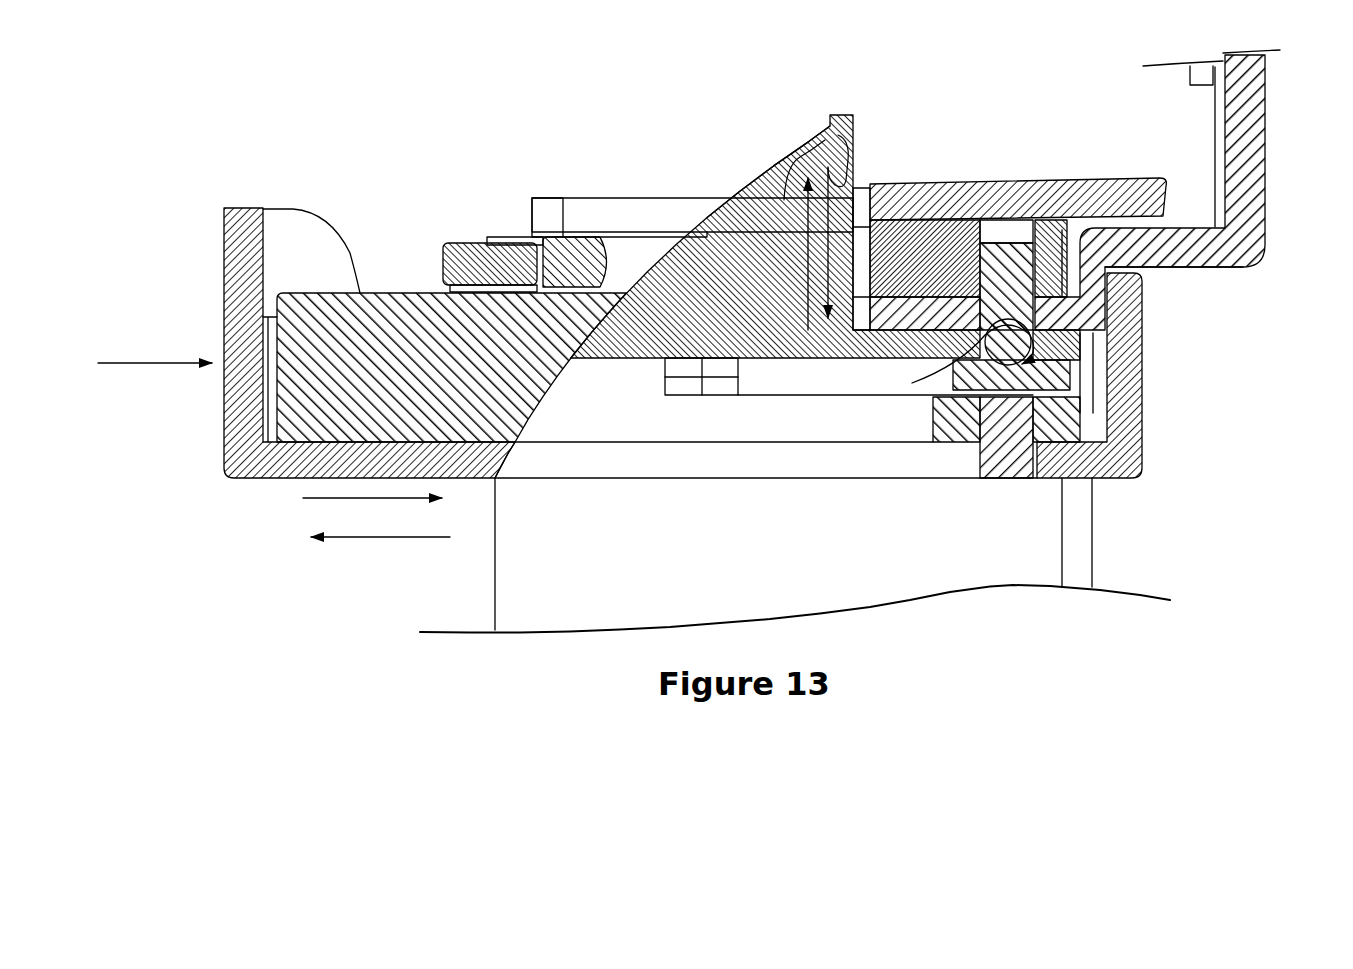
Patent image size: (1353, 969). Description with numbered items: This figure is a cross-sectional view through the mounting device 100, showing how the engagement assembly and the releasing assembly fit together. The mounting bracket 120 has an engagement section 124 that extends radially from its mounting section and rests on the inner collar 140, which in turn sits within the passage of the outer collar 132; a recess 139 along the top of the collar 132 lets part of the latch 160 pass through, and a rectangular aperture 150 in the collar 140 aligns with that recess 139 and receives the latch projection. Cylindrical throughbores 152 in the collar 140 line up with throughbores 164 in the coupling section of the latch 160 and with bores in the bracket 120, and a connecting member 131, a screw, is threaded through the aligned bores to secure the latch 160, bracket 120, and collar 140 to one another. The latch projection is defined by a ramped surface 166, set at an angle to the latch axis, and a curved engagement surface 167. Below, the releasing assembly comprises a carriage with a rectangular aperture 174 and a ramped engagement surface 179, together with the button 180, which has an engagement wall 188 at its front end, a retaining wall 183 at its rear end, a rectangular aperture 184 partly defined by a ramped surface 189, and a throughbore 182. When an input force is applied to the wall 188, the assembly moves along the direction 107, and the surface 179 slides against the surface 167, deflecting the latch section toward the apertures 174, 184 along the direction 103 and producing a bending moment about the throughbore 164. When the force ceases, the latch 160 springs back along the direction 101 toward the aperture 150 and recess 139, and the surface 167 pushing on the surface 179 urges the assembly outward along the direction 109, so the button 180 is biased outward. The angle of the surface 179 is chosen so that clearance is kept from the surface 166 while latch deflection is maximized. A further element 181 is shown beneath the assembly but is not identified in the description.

The mounting device 100 is at (272, 148).
The direction 101 is at (818, 118).
The direction 103 is at (855, 142).
The direction 107 is at (303, 498).
The direction 109 is at (350, 540).
The mounting bracket 120 is at (1270, 268).
The engagement section 124 is at (1177, 285).
The connecting member 131 is at (1088, 376).
The collar 132 is at (971, 163).
The recess 139 is at (590, 188).
The inner collar 140 is at (466, 228).
The aperture 150 is at (642, 224).
The throughbores 152 is at (1053, 222).
The latch 160 is at (741, 152).
The throughbores 164 is at (1056, 343).
The ramped surface 166 is at (768, 152).
The engagement surface 167 is at (603, 347).
The aperture 174 is at (734, 441).
The ramped engagement surface 179 is at (553, 378).
The button 180 is at (672, 383).
The support post 181 is at (1013, 480).
The throughbore 182 is at (938, 473).
The retaining wall 183 is at (1145, 448).
The aperture 184 is at (774, 479).
The engagement wall 188 is at (225, 293).
The ramped surface 189 is at (510, 463).